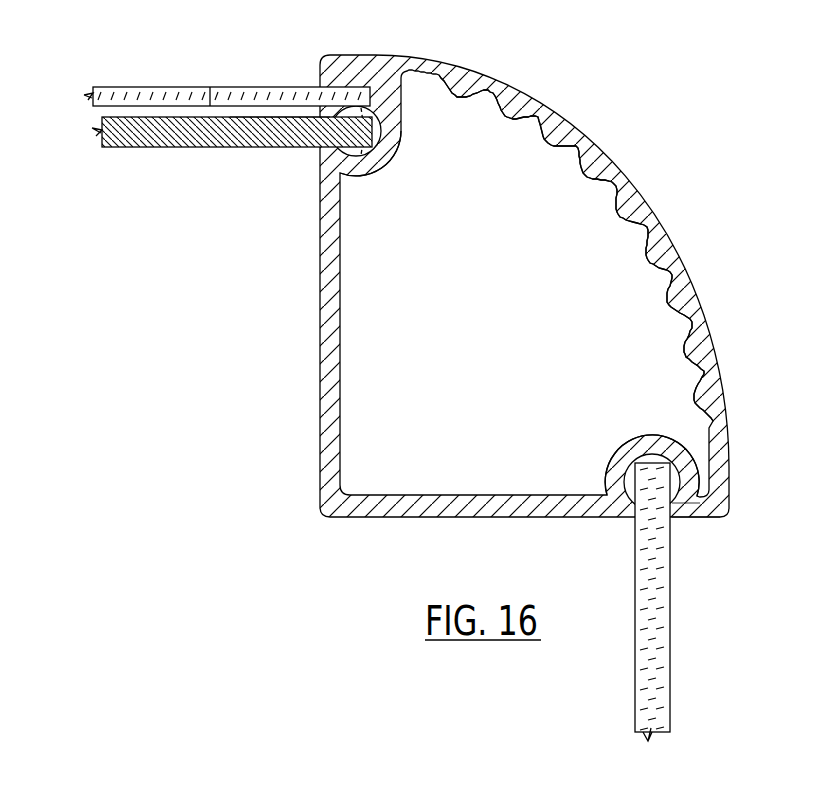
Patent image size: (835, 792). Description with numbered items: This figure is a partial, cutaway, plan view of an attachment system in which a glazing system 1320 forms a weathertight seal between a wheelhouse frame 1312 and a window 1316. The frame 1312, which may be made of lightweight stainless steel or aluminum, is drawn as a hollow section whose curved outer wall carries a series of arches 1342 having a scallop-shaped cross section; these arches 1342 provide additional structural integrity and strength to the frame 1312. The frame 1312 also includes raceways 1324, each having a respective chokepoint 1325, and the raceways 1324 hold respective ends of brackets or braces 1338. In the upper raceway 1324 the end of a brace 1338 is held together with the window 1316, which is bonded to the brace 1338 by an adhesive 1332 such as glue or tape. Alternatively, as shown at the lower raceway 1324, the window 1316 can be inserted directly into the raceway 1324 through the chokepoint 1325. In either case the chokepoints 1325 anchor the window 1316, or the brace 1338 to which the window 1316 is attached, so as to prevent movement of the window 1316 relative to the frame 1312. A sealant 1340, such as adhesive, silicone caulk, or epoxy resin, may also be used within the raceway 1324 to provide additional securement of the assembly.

The wheelhouse frame 1312 is at (340, 262).
The window 1316 is at (152, 87).
The glazing system 1320 is at (267, 168).
The raceway 1324 is at (361, 179).
The chokepoint 1325 is at (676, 503).
The adhesive 1332 is at (93, 108).
The brace 1338 is at (223, 148).
The sealant 1340 is at (372, 84).
The arches 1342 is at (617, 190).